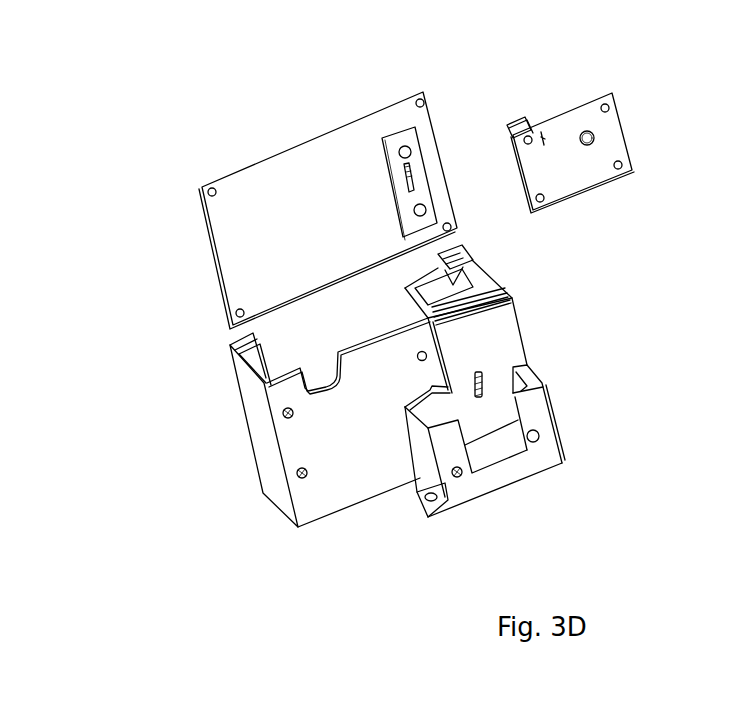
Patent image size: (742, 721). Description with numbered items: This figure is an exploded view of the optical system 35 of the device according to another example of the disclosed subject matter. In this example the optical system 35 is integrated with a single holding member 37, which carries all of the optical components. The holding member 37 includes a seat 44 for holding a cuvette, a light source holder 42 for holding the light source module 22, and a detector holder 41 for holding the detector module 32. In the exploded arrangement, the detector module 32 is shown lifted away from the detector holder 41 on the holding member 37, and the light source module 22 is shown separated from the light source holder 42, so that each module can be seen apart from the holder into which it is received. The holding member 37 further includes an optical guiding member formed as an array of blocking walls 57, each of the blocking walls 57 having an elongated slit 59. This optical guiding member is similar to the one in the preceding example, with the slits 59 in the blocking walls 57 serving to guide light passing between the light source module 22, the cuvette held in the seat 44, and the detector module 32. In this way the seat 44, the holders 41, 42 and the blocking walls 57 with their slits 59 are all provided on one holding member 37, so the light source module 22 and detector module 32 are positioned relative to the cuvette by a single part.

The optical system 35 is at (128, 160).
The detector module 32 is at (357, 163).
The light source module 22 is at (570, 125).
The holding member 37 is at (278, 477).
The detector holder 41 is at (243, 340).
The seat 44 is at (472, 252).
The blocking walls 57 is at (505, 302).
The elongated slit 59 is at (482, 377).
The light source holder 42 is at (502, 438).